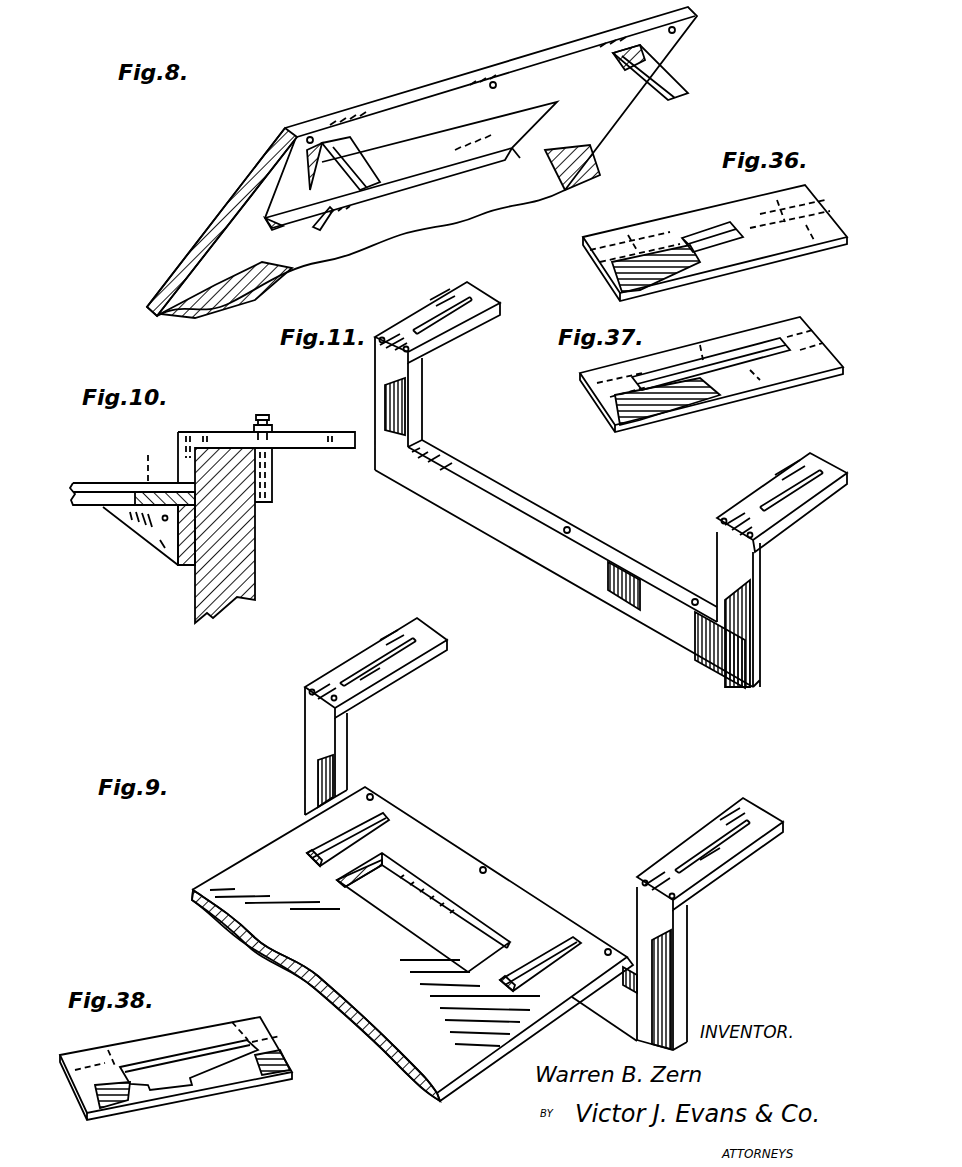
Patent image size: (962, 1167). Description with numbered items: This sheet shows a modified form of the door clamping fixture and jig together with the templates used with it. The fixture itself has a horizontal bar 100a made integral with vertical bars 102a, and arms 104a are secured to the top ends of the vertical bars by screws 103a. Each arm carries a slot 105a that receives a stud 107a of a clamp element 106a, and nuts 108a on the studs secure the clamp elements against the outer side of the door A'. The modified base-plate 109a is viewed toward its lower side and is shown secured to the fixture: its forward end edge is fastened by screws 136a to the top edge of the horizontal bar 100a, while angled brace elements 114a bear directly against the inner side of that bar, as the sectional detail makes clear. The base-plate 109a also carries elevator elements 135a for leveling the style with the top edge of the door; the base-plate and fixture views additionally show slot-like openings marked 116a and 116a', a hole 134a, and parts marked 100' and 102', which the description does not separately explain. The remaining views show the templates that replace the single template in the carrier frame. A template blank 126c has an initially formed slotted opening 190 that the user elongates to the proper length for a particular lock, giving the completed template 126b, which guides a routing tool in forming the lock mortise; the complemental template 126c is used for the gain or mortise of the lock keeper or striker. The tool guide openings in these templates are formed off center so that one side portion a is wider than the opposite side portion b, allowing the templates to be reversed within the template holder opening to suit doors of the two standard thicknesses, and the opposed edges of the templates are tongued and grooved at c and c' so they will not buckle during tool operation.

In FIG. 8, the base-plate 109a is at (355, 110).
In FIG. 10, the base-plate 109a is at (142, 517).
In FIG. 9, the base-plate 109a is at (290, 943).
In FIG. 8, the slot in plate 116a is at (425, 161).
In FIG. 10, the slot in plate 116a is at (131, 513).
In FIG. 9, the slot in plate 116a is at (423, 884).
In FIG. 9, the side slot in plate 116a' is at (414, 912).
In FIG. 8, the angled brace elements 114a is at (686, 86).
In FIG. 10, the angled brace elements 114a is at (170, 528).
In FIG. 36, the template 126c is at (672, 228).
In FIG. 38, the template 126c is at (267, 1051).
In FIG. 37, the template 126b is at (595, 387).
In FIG. 36, the slotted opening 190 is at (712, 243).
In FIG. 37, the side portion a is at (742, 383).
In FIG. 38, the side portion a is at (167, 1038).
In FIG. 37, the side portion b is at (703, 342).
In FIG. 38, the side portion b is at (213, 1080).
In FIG. 37, the tongue c is at (642, 442).
In FIG. 38, the groove c' is at (97, 1133).
In FIG. 11, the horizontal bar 100a is at (487, 484).
In FIG. 9, the horizontal bar 100a is at (610, 997).
In FIG. 10, the base rail 100' is at (168, 586).
In FIG. 11, the vertical bars 102a is at (390, 372).
In FIG. 10, the vertical bars 102a is at (178, 438).
In FIG. 9, the vertical bars 102a is at (667, 978).
In FIG. 9, the upright post 102' is at (301, 751).
In FIG. 10, the screws 103a is at (189, 432).
In FIG. 9, the screws 103a is at (333, 695).
In FIG. 11, the arms 104a is at (482, 294).
In FIG. 10, the arms 104a is at (346, 449).
In FIG. 9, the arms 104a is at (427, 631).
In FIG. 11, the slots 105a is at (445, 314).
In FIG. 10, the slots 105a is at (320, 441).
In FIG. 9, the slots 105a is at (387, 648).
In FIG. 10, the clamp elements 106a is at (273, 497).
In FIG. 10, the studs 107a is at (265, 413).
In FIG. 10, the nuts 108a is at (273, 423).
In FIG. 10, the screw hole 134a is at (149, 464).
In FIG. 10, the elevator elements 135a is at (88, 483).
In FIG. 9, the screws 136a is at (373, 796).
In FIG. 10, the door A' is at (248, 535).